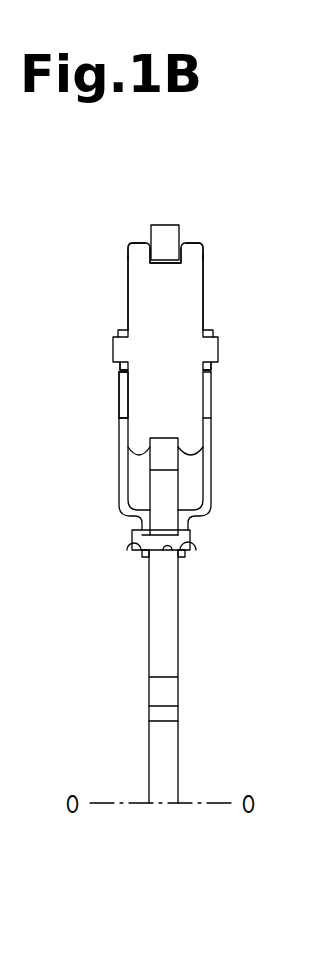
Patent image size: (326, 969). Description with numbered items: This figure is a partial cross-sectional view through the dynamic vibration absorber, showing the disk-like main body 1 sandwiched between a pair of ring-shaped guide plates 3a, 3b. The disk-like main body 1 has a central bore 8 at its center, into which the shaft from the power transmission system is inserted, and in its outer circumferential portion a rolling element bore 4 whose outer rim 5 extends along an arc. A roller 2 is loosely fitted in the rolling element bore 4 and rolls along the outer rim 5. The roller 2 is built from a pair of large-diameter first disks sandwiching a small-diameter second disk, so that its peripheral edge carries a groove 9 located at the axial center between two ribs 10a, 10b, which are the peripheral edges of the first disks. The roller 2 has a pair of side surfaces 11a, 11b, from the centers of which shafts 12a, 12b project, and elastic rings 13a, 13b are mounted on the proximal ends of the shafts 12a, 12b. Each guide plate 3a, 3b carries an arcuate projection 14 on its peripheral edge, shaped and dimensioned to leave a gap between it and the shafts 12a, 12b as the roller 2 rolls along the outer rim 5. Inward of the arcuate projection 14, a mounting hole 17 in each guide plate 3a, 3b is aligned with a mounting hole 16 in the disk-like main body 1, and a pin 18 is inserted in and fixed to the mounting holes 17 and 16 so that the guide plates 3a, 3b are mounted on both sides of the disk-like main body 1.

The disk-like main body 1 is at (158, 625).
The roller 2 is at (138, 308).
The guide plate 3a is at (119, 470).
The guide plate 3b is at (211, 470).
The rolling element bore 4 is at (207, 239).
The outer rim 5 is at (172, 257).
The central bore 8 is at (166, 722).
The groove 9 is at (161, 255).
The rib 10a is at (128, 246).
The rib 10b is at (203, 246).
The side surface 11a is at (128, 272).
The side surface 11b is at (203, 290).
The shaft 12a is at (112, 340).
The shaft 12b is at (217, 348).
The elastic ring 13a is at (120, 366).
The elastic ring 13b is at (207, 366).
The arcuate projection 14 is at (119, 386).
The mounting hole 16 is at (172, 550).
The mounting hole 17 is at (132, 548).
The pin 18 is at (193, 537).